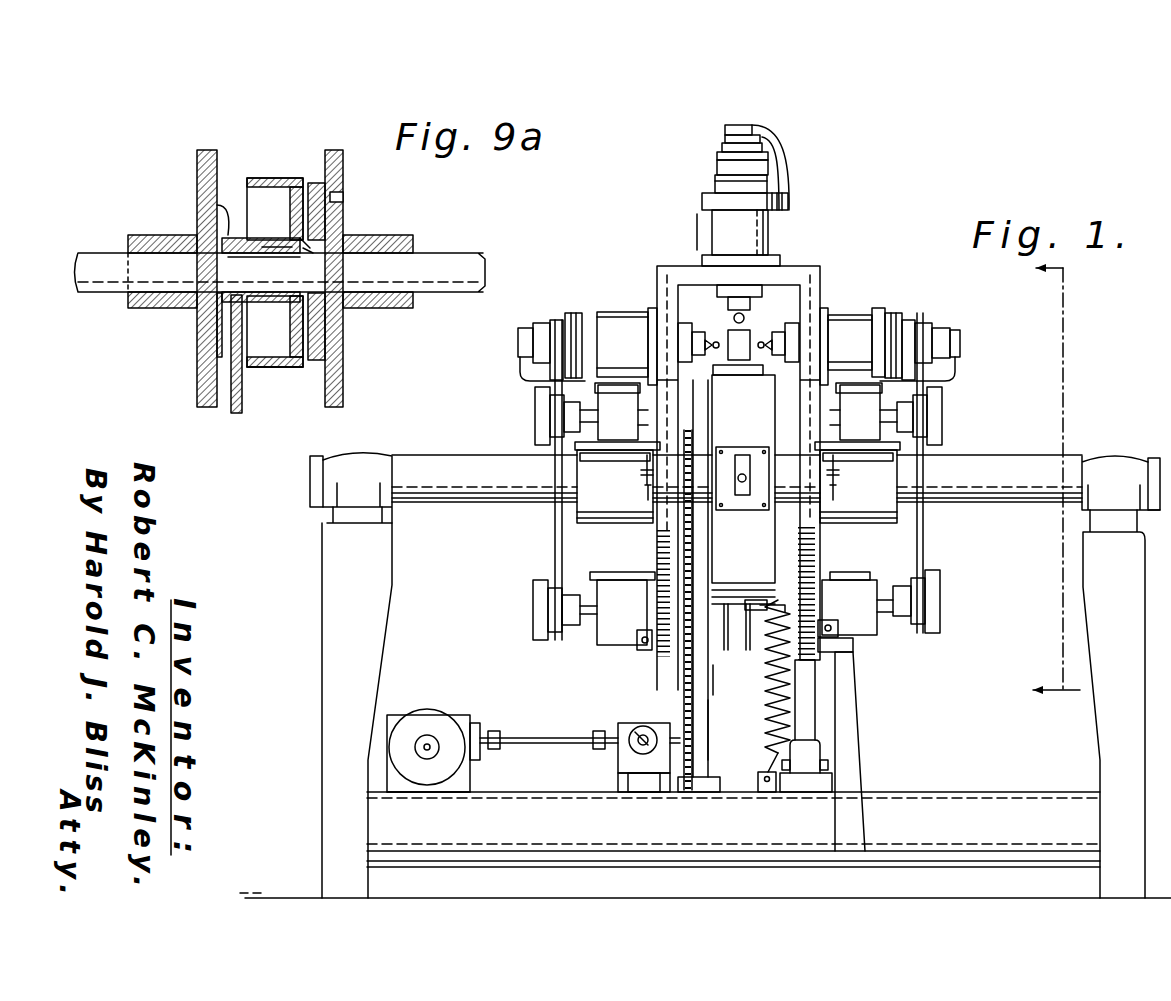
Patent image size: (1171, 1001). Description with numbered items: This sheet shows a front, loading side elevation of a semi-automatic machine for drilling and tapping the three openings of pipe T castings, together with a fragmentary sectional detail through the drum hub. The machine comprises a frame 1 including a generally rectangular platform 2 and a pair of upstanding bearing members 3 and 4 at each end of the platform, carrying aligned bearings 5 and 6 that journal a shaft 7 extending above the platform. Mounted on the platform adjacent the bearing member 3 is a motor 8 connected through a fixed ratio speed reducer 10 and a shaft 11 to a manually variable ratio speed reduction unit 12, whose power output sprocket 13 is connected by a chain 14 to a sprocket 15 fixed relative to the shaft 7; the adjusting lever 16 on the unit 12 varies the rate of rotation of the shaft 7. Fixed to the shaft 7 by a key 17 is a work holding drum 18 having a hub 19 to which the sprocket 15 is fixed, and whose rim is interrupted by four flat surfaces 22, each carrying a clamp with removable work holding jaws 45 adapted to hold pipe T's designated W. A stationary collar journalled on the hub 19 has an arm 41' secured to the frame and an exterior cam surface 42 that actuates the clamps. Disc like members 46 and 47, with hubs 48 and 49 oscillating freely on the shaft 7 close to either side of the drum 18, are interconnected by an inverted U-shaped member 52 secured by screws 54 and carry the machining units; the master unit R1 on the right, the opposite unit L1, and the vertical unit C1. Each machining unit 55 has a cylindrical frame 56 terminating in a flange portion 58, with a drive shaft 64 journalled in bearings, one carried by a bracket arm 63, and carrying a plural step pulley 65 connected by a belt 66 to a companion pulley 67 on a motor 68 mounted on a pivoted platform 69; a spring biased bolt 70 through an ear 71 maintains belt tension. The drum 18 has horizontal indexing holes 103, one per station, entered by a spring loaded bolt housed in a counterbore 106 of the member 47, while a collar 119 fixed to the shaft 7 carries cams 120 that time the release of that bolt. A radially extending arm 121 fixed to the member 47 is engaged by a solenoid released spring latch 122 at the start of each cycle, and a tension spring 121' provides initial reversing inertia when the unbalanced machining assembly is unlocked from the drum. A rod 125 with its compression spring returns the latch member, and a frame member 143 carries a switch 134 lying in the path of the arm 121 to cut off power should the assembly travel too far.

In FIG. 1, the frame 1 is at (322, 740).
In FIG. 1, the platform 2 is at (1022, 792).
In FIG. 1, the bearing member 3 is at (300, 645).
In FIG. 1, the bearing member 4 is at (712, 222).
In FIG. 1, the bearing 5 is at (368, 458).
In FIG. 1, the bearing 6 is at (1118, 460).
In FIG. 9a, the shaft 7 is at (457, 257).
In FIG. 1, the shaft 7 is at (1036, 497).
In FIG. 1, the motor 8 is at (440, 713).
In FIG. 1, the fixed ratio speed reducer 10 is at (393, 715).
In FIG. 1, the shaft 11 is at (531, 736).
In FIG. 1, the manually variable ratio speed reduction unit 12 is at (618, 756).
In FIG. 1, the power output sprocket 13 is at (708, 742).
In FIG. 1, the chain 14 is at (683, 688).
In FIG. 9a, the sprocket 15 is at (217, 207).
In FIG. 1, the sprocket 15 is at (690, 440).
In FIG. 1, the adjusting lever 16 is at (638, 728).
In FIG. 9a, the key 17 is at (245, 256).
In FIG. 9a, the work holding drum 18 is at (279, 367).
In FIG. 1, the work holding drum 18 is at (758, 400).
In FIG. 9a, the hub 19 is at (272, 250).
In FIG. 1, the flat surface 22 is at (765, 447).
In FIG. 9a, the arm 41' is at (257, 363).
In FIG. 1, the arm 41' is at (730, 730).
In FIG. 9a, the cam surface 42 is at (263, 238).
In FIG. 1, the work holding jaw 45 is at (725, 447).
In FIG. 9a, the disc like member 46 is at (197, 386).
In FIG. 1, the disc like member 46 is at (668, 553).
In FIG. 9a, the disc like member 47 is at (343, 391).
In FIG. 1, the disc like member 47 is at (815, 547).
In FIG. 9a, the hub 48 is at (150, 310).
In FIG. 1, the hub 48 is at (606, 521).
In FIG. 9a, the hub 49 is at (396, 312).
In FIG. 1, the hub 49 is at (870, 526).
In FIG. 1, the inverted U-shaped member 52 is at (688, 266).
In FIG. 1, the screw 54 is at (657, 272).
In FIG. 1, the machining unit 55 is at (774, 237).
In FIG. 1, the frame 56 is at (776, 226).
In FIG. 1, the flange portion 58 is at (826, 304).
In FIG. 1, the bracket arm 63 is at (787, 160).
In FIG. 1, the drive shaft 64 is at (962, 342).
In FIG. 1, the plural step pulley 65 is at (712, 180).
In FIG. 1, the belt 66 is at (717, 172).
In FIG. 1, the companion pulley 67 is at (535, 420).
In FIG. 1, the motor 68 is at (945, 546).
In FIG. 1, the pivoted platform 69 is at (600, 462).
In FIG. 1, the spring biased bolt 70 is at (640, 481).
In FIG. 1, the ear 71 is at (640, 489).
In FIG. 9a, the horizontal hole 103 is at (277, 190).
In FIG. 9a, the counterbore 106 is at (338, 196).
In FIG. 9a, the collar 119 is at (310, 247).
In FIG. 9a, the cam 120 is at (302, 240).
In FIG. 1, the arm 121 is at (852, 700).
In FIG. 1, the tension spring 121' is at (752, 658).
In FIG. 1, the solenoid released spring latch 122 is at (820, 750).
In FIG. 1, the rod 125 is at (842, 660).
In FIG. 1, the switch 134 is at (855, 655).
In FIG. 1, the member 143 is at (858, 729).
In FIG. 1, the vertical unit C1 is at (797, 200).
In FIG. 1, the opposite unit L1 is at (518, 358).
In FIG. 1, the master unit R1 is at (965, 350).
In FIG. 1, the pipe T W is at (746, 332).